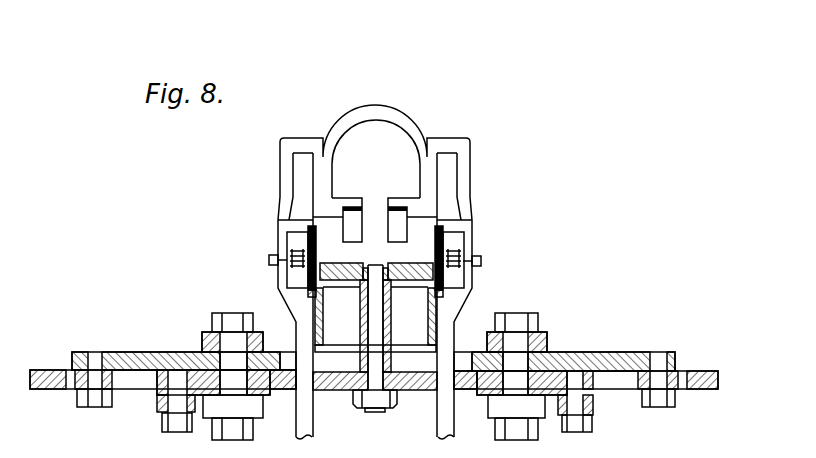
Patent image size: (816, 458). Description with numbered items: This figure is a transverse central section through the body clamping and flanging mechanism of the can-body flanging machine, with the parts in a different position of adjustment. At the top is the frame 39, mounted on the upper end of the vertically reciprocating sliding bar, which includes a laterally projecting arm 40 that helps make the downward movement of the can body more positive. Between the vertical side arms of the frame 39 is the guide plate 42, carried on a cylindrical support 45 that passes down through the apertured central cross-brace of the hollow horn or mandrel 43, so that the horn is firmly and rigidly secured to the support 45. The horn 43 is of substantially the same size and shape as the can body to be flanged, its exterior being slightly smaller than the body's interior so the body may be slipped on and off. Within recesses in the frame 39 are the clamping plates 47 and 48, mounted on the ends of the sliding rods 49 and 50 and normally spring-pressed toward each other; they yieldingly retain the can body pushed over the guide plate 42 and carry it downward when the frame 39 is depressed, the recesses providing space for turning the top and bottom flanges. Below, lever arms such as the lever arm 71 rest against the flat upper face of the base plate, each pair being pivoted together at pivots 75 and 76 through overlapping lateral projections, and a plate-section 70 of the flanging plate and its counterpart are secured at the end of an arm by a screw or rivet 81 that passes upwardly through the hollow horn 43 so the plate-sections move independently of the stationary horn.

The frame 39 is at (452, 212).
The laterally projecting arm 40 is at (375, 209).
The guide plate 42 is at (396, 266).
The hollow horn or mandrel 43 is at (323, 306).
The cylindrical support 45 is at (363, 360).
The clamping plate 47 is at (308, 237).
The clamping plate 48 is at (445, 243).
The sliding rod 49 is at (269, 259).
The sliding rod 50 is at (481, 260).
The plate-section 70 is at (128, 352).
The lever arm 71 is at (264, 350).
The pivot 75 is at (227, 340).
The pivot 76 is at (515, 350).
The screw or rivet 81 is at (266, 395).